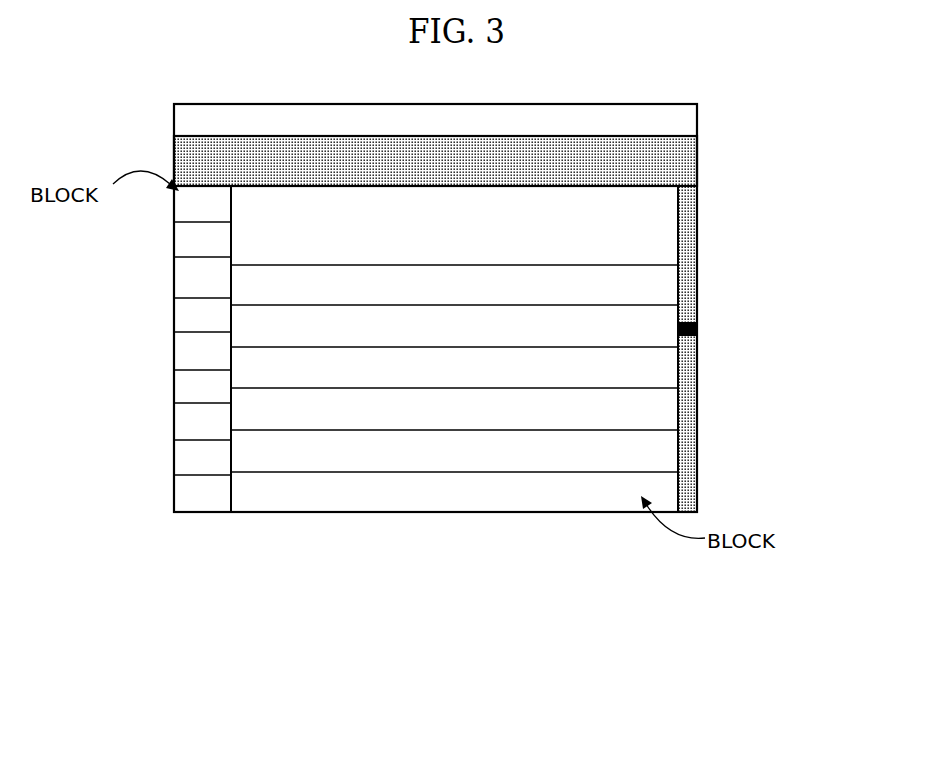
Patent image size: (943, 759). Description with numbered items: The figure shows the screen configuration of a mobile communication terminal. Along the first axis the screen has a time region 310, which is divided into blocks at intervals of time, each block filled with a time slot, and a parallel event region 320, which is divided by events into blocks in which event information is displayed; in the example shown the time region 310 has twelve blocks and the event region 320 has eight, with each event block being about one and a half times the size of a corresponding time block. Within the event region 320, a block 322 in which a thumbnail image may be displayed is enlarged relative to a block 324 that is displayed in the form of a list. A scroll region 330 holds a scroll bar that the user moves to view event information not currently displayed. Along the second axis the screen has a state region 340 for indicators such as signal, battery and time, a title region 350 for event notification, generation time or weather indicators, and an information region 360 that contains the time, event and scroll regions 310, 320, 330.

The time region 310 is at (197, 432).
The event region 320 is at (648, 232).
The block 322 is at (472, 187).
The block 324 is at (452, 270).
The scroll region 330 is at (690, 329).
The state region 340 is at (648, 120).
The title region 350 is at (648, 158).
The information region 360 is at (160, 192).